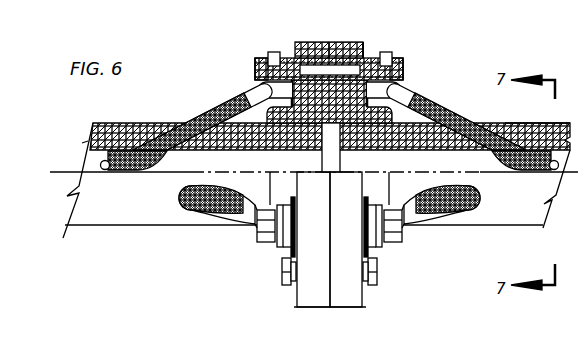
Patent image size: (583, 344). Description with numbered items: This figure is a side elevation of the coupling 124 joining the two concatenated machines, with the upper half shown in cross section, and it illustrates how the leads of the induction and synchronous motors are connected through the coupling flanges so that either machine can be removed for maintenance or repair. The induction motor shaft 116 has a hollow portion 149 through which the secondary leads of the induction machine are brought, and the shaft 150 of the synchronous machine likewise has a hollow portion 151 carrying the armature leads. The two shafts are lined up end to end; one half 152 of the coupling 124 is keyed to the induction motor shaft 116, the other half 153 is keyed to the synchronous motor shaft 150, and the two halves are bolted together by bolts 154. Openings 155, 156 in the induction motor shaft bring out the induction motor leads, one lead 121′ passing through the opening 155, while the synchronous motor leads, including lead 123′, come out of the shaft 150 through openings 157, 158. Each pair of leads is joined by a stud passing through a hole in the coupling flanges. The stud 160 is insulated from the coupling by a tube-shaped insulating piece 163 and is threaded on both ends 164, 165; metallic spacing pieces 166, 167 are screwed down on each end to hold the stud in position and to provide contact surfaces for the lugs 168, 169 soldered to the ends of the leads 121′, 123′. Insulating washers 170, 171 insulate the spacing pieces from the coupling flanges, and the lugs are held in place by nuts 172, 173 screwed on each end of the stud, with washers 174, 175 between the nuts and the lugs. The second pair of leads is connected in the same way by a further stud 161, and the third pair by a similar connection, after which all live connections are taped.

The induction motor shaft 116 is at (118, 217).
The first induction motor lead 121′ is at (218, 114).
The first synchronous motor lead 123′ is at (449, 112).
The coupling 124 is at (474, 69).
The hollow portion of induction motor shaft 149 is at (134, 126).
The synchronous motor shaft 150 is at (490, 213).
The hollow portion of synchronous motor shaft 151 is at (524, 129).
The coupling half 152 is at (307, 297).
The coupling half 153 is at (348, 297).
The bolts 154 is at (384, 272).
The opening 155 is at (188, 132).
The opening 156 is at (237, 192).
The opening 157 is at (470, 150).
The opening 158 is at (427, 190).
The stud 160 is at (334, 66).
The stud 161 is at (404, 232).
The tube-shaped insulating piece 163 is at (322, 52).
The threaded end of stud 164 is at (256, 76).
The threaded end of stud 165 is at (397, 76).
The metallic spacing piece 166 is at (291, 53).
The metallic spacing piece 167 is at (368, 64).
The lug 168 is at (250, 89).
The lug 169 is at (404, 96).
The insulating washer 170 is at (289, 43).
The insulating washer 171 is at (368, 44).
The nut 172 is at (256, 64).
The nut 173 is at (395, 66).
The washer 174 is at (268, 56).
The washer 175 is at (392, 57).